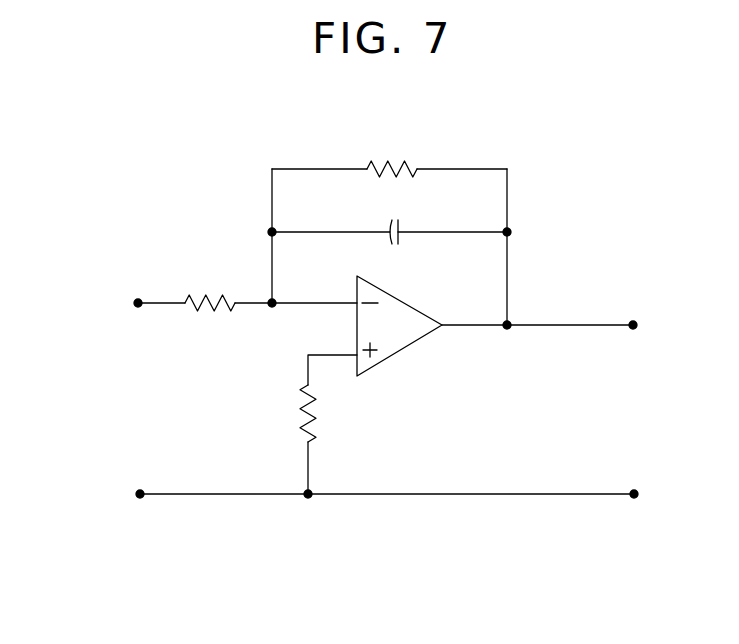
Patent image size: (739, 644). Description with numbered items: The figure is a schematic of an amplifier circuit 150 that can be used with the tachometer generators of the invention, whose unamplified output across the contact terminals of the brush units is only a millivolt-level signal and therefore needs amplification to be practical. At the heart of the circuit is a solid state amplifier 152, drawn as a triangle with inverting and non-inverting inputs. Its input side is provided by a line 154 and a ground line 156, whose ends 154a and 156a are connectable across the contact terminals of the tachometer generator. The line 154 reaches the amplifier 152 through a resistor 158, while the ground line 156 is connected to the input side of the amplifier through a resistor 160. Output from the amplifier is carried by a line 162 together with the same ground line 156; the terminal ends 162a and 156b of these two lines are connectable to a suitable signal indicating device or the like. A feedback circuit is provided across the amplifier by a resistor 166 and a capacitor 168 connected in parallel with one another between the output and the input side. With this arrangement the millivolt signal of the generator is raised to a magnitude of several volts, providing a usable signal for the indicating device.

The amplifier circuit 150 is at (572, 160).
The solid state amplifier 152 is at (410, 290).
The input line 154 is at (250, 306).
The end of input line 154a is at (136, 300).
The ground line 156 is at (260, 493).
The end of ground line 156a is at (137, 491).
The terminal end of ground line 156b is at (632, 491).
The resistor 158 is at (216, 300).
The resistor 160 is at (303, 406).
The output line 162 is at (403, 348).
The terminal end of output line 162a is at (632, 321).
The feedback resistor 166 is at (403, 162).
The feedback capacitor 168 is at (399, 226).